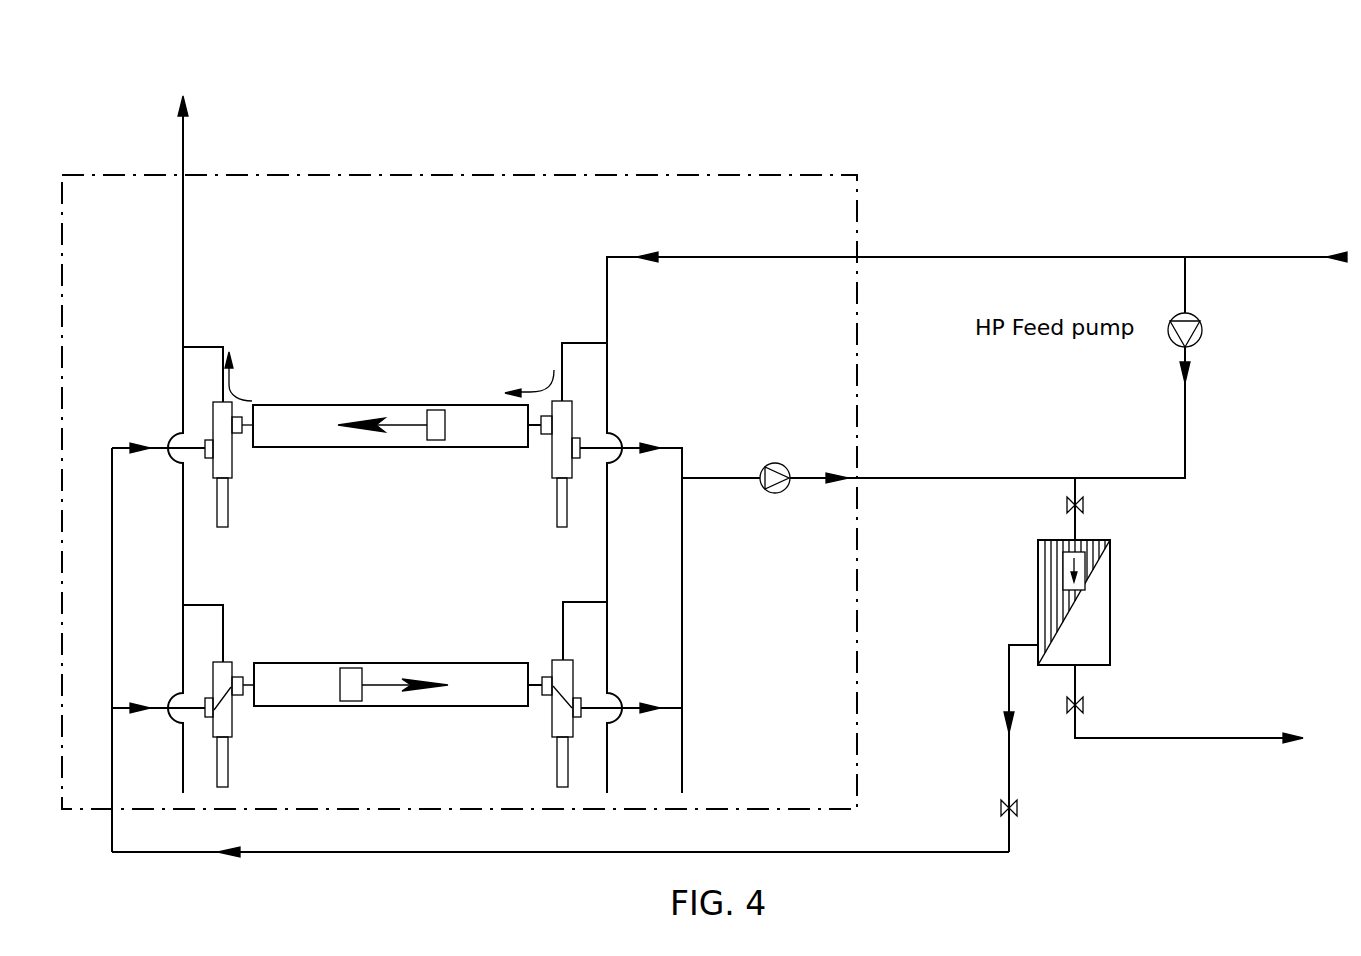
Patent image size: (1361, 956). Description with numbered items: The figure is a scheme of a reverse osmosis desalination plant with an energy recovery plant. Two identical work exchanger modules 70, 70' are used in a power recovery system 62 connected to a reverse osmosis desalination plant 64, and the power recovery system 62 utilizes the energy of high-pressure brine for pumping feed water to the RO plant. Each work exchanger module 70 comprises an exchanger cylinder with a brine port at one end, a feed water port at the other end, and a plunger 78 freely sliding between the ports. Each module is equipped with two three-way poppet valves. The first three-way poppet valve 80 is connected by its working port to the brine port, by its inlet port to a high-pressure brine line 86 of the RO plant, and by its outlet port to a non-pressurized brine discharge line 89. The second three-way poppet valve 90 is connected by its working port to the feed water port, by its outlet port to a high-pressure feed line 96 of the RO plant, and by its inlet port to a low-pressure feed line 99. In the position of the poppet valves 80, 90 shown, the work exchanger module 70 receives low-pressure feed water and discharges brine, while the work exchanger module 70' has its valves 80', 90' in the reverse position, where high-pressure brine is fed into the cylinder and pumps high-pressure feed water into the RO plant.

The power recovery system 62 is at (777, 175).
The reverse osmosis desalination plant 64 is at (1112, 627).
The work exchanger module 70 is at (390, 365).
The work exchanger module 70' is at (391, 636).
The plunger 78 is at (436, 440).
The first three-way poppet valve 80 is at (256, 464).
The first three-way poppet valve 80' is at (259, 724).
The high-pressure brine line 86 is at (300, 852).
The non-pressurized brine discharge line 89 is at (183, 256).
The second three-way poppet valve 90 is at (582, 597).
The second three-way poppet valve 90' is at (582, 723).
The high-pressure feed line 96 is at (709, 478).
The low-pressure feed line 99 is at (733, 257).